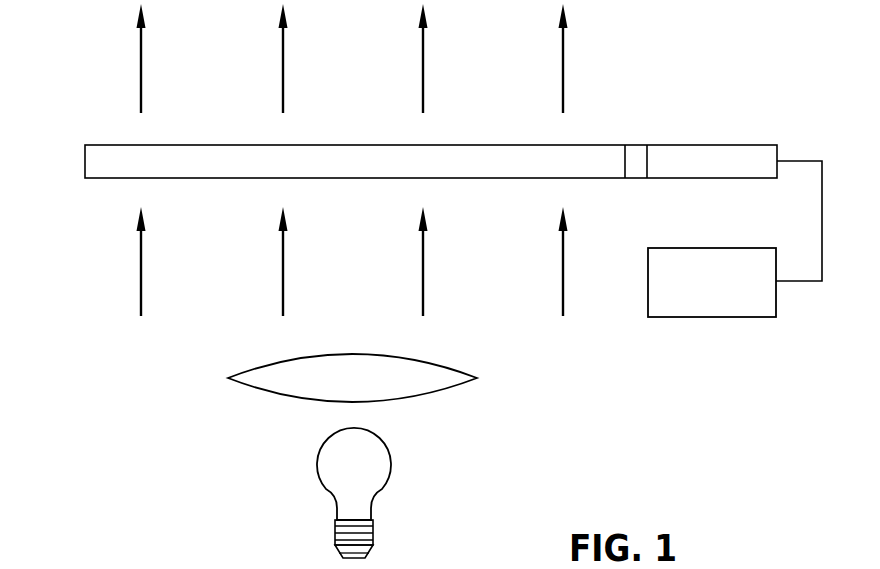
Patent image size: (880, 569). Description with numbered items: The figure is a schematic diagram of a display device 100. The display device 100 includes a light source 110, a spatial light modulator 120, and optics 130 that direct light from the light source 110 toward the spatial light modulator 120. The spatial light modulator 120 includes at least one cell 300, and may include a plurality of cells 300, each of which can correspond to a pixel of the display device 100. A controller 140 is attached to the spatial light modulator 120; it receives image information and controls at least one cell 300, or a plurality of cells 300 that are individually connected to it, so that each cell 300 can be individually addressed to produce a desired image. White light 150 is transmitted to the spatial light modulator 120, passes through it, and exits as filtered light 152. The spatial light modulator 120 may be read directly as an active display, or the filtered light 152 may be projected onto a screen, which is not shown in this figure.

The display device 100 is at (710, 60).
The light source 110 is at (392, 465).
The spatial light modulator 120 is at (85, 157).
The optics 130 is at (432, 361).
The controller 140 is at (712, 248).
The white light 150 is at (141, 258).
The filtered light 152 is at (141, 57).
The cell 300 is at (637, 144).